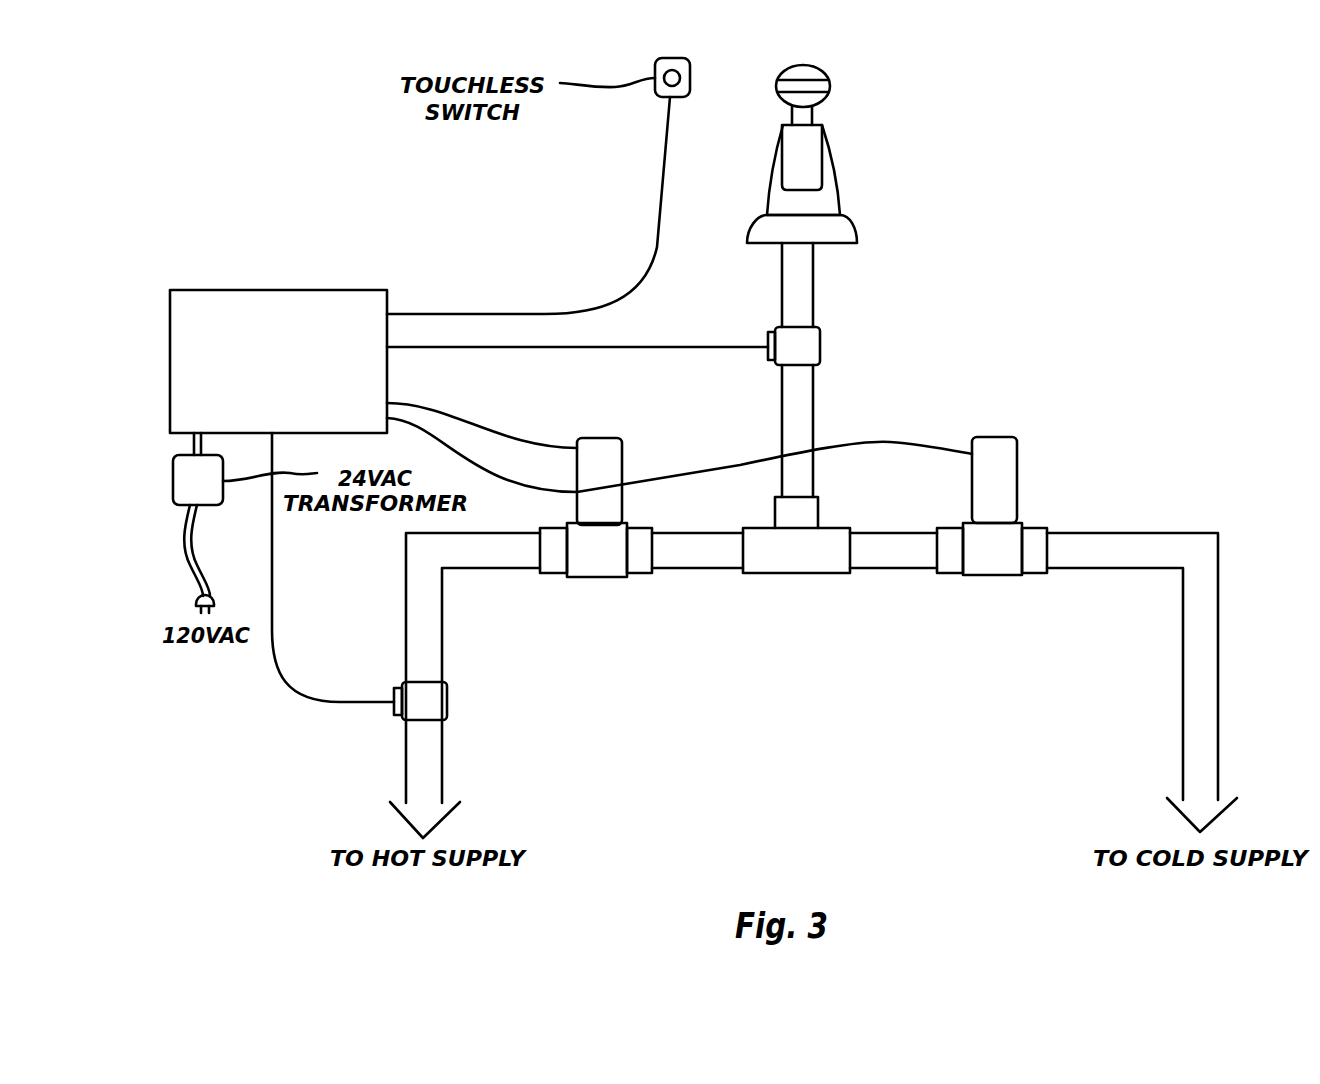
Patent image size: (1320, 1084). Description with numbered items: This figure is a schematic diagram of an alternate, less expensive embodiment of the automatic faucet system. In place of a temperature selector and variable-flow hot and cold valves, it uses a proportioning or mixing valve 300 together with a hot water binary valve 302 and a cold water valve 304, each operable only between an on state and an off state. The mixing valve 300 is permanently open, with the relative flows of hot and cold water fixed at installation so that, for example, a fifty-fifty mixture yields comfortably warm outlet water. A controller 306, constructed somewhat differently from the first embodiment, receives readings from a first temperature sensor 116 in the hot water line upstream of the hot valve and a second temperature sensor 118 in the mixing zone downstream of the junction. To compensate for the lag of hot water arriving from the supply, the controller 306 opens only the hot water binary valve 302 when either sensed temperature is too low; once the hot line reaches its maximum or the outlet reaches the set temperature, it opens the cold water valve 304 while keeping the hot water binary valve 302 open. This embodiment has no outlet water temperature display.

The controller 306 is at (287, 290).
The hot water binary valve 302 is at (622, 463).
The cold water valve 304 is at (1017, 485).
The proportioning or mixing valve 300 is at (783, 573).
The second temperature sensor 118 is at (820, 335).
The first temperature sensor 116 is at (447, 695).